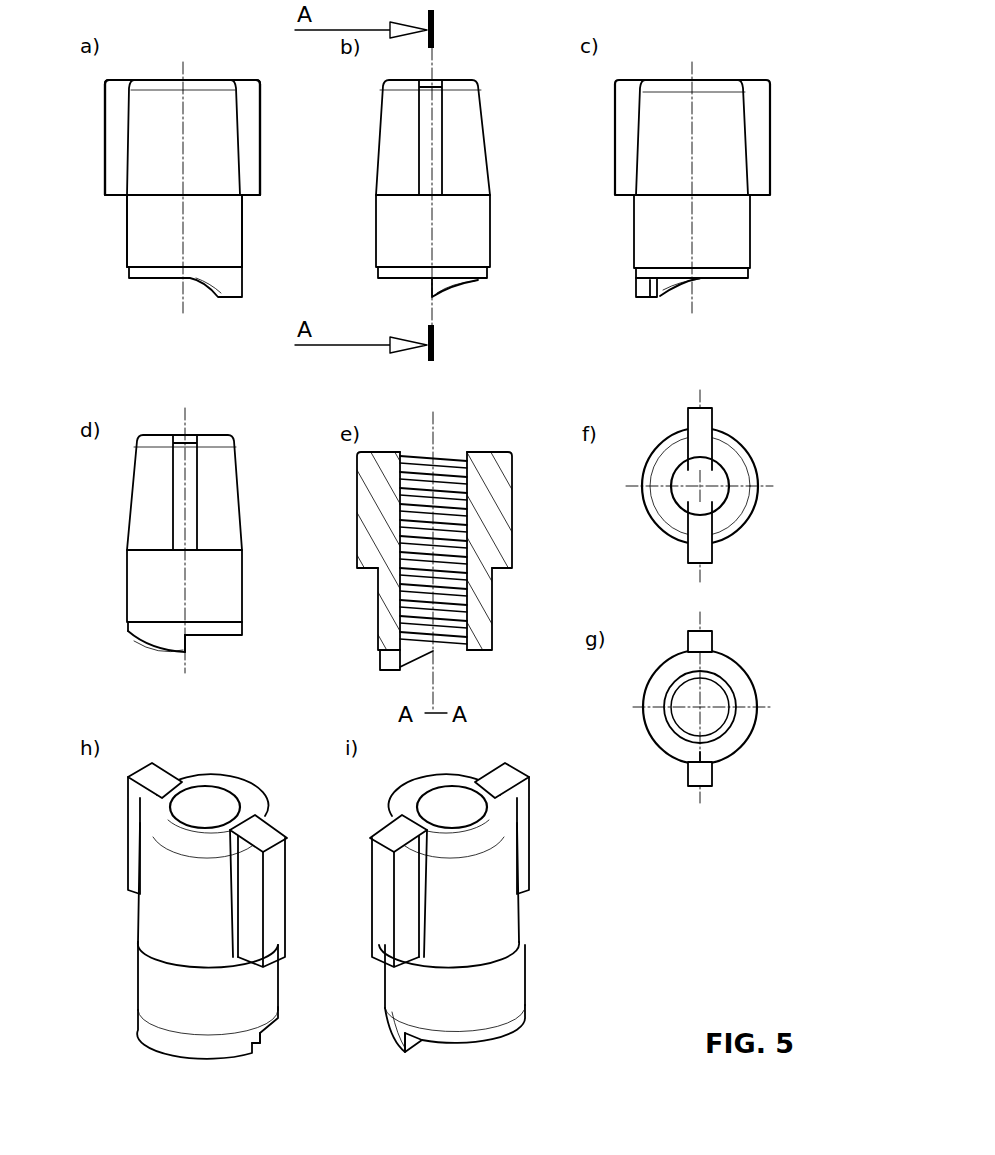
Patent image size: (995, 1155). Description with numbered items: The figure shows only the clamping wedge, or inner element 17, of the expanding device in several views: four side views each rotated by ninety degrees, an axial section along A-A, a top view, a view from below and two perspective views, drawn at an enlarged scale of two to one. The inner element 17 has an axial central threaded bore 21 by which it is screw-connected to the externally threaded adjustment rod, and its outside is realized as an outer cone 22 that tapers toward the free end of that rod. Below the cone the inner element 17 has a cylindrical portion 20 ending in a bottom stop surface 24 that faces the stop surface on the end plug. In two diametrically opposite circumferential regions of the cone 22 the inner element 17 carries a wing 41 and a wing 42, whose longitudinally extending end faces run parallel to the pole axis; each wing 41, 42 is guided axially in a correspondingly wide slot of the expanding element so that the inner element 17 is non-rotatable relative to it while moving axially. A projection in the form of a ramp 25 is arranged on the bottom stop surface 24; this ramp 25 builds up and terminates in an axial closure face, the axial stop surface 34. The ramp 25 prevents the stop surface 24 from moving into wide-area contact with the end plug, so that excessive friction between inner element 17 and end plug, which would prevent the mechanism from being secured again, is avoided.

The inner element 17 is at (121, 227).
The cylindrical portion 20 is at (105, 972).
The axial threaded bore 21 is at (450, 500).
The outer cone 22 is at (107, 909).
The bottom stop surface 24 is at (273, 667).
The ramp 25 is at (225, 1073).
The axial stop surface 34 is at (642, 295).
The wing 41 is at (627, 122).
The wing 42 is at (98, 810).